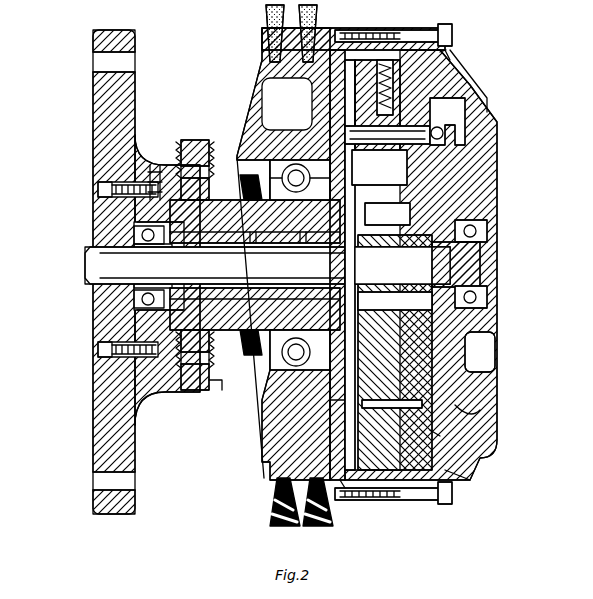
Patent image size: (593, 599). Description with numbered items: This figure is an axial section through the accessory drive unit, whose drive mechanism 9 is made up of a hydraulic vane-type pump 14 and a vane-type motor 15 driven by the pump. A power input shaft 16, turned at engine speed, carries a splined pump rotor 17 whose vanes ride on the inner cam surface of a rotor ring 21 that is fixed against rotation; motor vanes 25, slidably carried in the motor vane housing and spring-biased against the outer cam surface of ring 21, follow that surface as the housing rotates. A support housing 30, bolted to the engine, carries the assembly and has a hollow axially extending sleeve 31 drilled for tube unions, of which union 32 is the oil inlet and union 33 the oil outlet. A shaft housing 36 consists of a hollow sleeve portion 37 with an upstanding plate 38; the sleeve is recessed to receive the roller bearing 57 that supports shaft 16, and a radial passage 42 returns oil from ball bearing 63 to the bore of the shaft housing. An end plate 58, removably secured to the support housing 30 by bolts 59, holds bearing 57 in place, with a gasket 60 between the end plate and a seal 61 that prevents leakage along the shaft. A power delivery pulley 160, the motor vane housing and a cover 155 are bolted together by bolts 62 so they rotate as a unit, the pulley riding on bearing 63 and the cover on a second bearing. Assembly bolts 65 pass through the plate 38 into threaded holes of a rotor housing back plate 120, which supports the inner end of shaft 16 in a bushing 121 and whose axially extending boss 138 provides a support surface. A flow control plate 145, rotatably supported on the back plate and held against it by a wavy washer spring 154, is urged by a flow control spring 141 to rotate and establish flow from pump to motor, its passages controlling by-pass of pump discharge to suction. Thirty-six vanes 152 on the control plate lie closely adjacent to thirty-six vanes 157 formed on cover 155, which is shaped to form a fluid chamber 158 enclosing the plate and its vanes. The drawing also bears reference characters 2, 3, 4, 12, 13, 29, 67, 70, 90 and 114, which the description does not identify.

The support housing 30 is at (96, 93).
The end plate 58 is at (96, 210).
The bolts 59 is at (96, 188).
The seal 61 is at (100, 296).
The gasket 60 is at (156, 168).
The roller bearing 57 is at (158, 266).
The power input shaft 16 is at (86, 264).
The shaft housing 36 is at (228, 238).
The radial passage 42 is at (260, 238).
The hollow sleeve portion 37 is at (302, 238).
The hydraulic vane-type pump 14 is at (391, 265).
The union 32 is at (196, 140).
The hollow axially extending sleeve 31 is at (172, 382).
The union 33 is at (196, 394).
The assembly bolts 65 is at (318, 136).
The ball bearing 63 is at (296, 164).
The friction pad 13 is at (266, 18).
The friction pad 12 is at (318, 14).
The upstanding plate 38 is at (330, 434).
The bearing 90 is at (345, 452).
The plate 70 is at (335, 410).
The power delivery pulley 160 is at (270, 494).
The drive mechanism 9 is at (508, 242).
The rotor ring 21 is at (387, 126).
The pump rotor 17 is at (387, 214).
The chamber 29 is at (397, 217).
The bushing 121 is at (402, 352).
The bolt / section line 3 is at (422, 12).
The vane-type motor 15 is at (436, 503).
The section line 4 is at (426, 18).
The section line 2 is at (52, 586).
The rotor housing back plate 120 is at (446, 58).
The flow control spring 141 is at (466, 116).
The cover 155 is at (498, 142).
The wavy washer spring 154 is at (482, 226).
The axially extending boss 138 is at (480, 268).
The bearing 67 is at (482, 295).
The flow control plate 145 is at (450, 356).
The vanes 157 is at (465, 412).
The fluid chamber 158 is at (440, 434).
The vanes 152 is at (452, 472).
The bolts 62 is at (346, 500).
The motor vane 25 is at (378, 500).
The element 114 is at (233, 592).